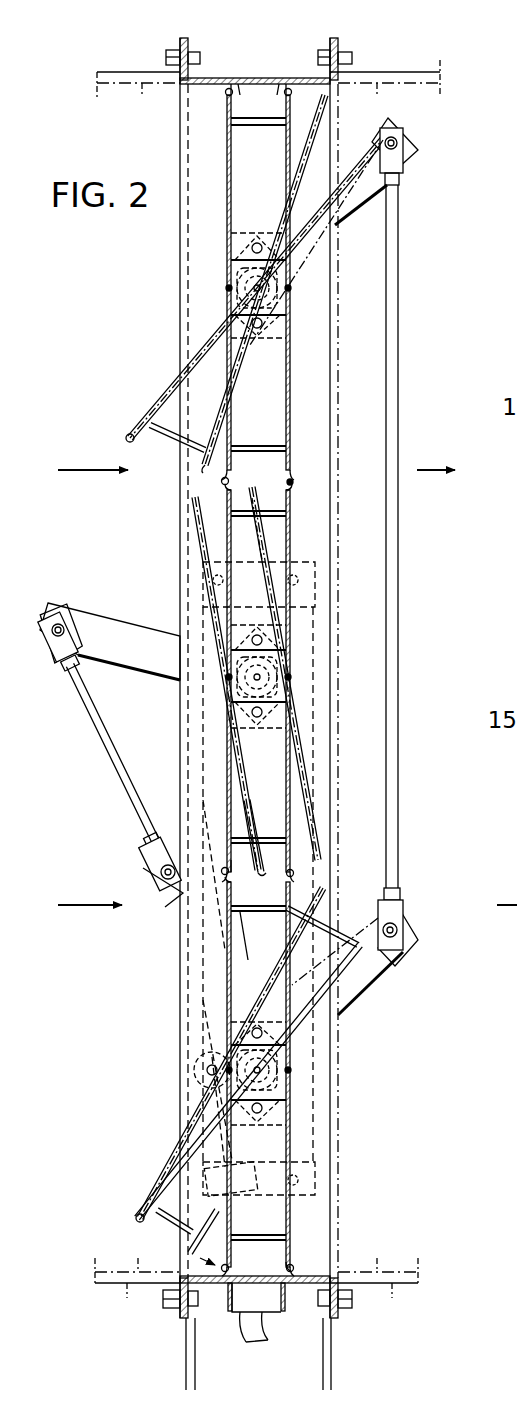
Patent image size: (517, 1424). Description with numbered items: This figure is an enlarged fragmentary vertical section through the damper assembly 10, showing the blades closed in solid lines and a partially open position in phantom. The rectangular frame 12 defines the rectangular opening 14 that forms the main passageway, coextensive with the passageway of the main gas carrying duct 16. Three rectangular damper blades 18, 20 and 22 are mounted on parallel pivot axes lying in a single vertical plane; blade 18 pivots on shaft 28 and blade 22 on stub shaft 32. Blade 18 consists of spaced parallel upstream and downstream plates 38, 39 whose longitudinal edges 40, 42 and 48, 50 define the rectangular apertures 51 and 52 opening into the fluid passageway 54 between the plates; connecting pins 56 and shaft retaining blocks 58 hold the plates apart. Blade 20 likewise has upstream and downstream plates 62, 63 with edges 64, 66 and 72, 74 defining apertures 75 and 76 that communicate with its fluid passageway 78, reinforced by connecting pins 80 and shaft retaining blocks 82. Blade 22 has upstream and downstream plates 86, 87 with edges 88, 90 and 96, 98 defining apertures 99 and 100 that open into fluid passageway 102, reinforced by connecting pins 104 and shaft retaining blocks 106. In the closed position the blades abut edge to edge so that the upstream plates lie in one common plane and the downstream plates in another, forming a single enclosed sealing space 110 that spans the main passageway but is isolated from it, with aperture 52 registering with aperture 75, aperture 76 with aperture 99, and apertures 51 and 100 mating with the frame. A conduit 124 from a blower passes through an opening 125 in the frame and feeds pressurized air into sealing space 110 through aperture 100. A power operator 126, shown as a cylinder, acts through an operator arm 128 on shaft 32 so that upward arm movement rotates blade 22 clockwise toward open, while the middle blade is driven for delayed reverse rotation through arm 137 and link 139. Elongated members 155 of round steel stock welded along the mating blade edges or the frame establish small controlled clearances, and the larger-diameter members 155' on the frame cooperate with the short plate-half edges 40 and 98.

The damper assembly 10 is at (158, 135).
The rectangular frame 12 is at (184, 44).
The rectangular opening 14 is at (238, 90).
The main gas carrying duct 16 is at (115, 72).
The damper blade 18 is at (225, 262).
The damper blade 20 is at (225, 758).
The damper blade 22 is at (226, 970).
The shaft 28 is at (243, 212).
The stub shaft 32 is at (228, 1097).
The upstream plate 38 is at (228, 207).
The downstream plate 39 is at (345, 222).
The longitudinal edge 40 is at (226, 98).
The longitudinal edge 42 is at (234, 450).
The longitudinal edge 48 is at (284, 96).
The longitudinal edge 50 is at (290, 478).
The rectangular aperture 51 is at (241, 95).
The rectangular aperture 52 is at (272, 450).
The fluid passageway 54 is at (272, 370).
The connecting pins 56 is at (272, 125).
The shaft retaining blocks 58 is at (289, 302).
The upstream plate 62 is at (225, 730).
The downstream plate 63 is at (305, 768).
The longitudinal edge 64 is at (226, 496).
The longitudinal edge 66 is at (226, 866).
The longitudinal edge 72 is at (290, 497).
The longitudinal edge 74 is at (318, 862).
The rectangular aperture 75 is at (290, 520).
The rectangular aperture 76 is at (268, 838).
The fluid passageway 78 is at (272, 760).
The connecting pins 80 is at (254, 512).
The shaft retaining blocks 82 is at (290, 662).
The upstream plate 86 is at (228, 984).
The downstream plate 87 is at (290, 1042).
The longitudinal edge 88 is at (226, 884).
The longitudinal edge 90 is at (268, 1236).
The longitudinal edge 96 is at (240, 912).
The longitudinal edge 98 is at (291, 1258).
The rectangular aperture 99 is at (240, 940).
The rectangular aperture 100 is at (272, 1300).
The fluid passageway 102 is at (245, 998).
The connecting pins 104 is at (316, 1195).
The shaft retaining blocks 106 is at (290, 1103).
The sealing space 110 is at (250, 603).
The conduit 124 is at (288, 1300).
The opening 125 is at (232, 1318).
The power operator 126 is at (254, 1342).
The operator arm 128 is at (210, 1057).
The arm 137 is at (105, 745).
The link 139 is at (88, 616).
The elongated members 155 is at (220, 881).
The elongated members 155' is at (339, 1249).